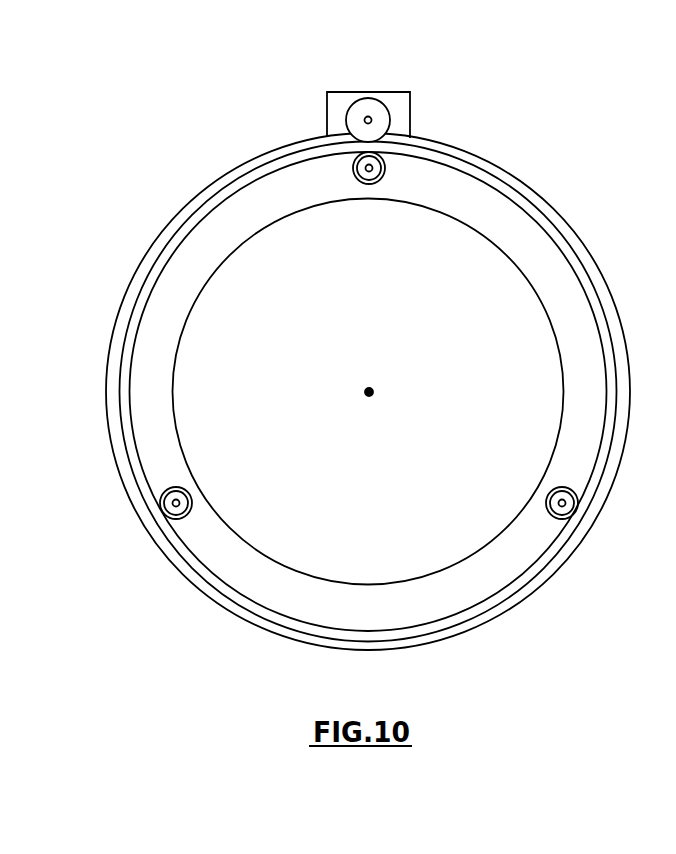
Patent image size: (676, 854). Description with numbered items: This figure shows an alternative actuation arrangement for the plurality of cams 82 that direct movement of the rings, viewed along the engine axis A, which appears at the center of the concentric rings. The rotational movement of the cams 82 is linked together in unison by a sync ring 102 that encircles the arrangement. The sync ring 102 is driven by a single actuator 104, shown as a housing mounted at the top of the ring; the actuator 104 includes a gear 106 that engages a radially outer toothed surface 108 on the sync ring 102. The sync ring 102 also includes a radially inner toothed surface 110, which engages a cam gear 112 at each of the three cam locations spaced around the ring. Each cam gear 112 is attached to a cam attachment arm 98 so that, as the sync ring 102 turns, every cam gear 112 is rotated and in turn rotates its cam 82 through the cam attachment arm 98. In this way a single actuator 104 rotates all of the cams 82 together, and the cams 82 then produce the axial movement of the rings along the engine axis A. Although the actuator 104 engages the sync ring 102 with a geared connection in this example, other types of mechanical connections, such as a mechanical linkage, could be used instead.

The sync ring 102 is at (518, 191).
The actuator 104 is at (397, 92).
The gear 106 is at (367, 103).
The radially outer toothed surface 108 is at (460, 163).
The radially inner toothed surface 110 is at (454, 166).
The cam gear 112 is at (385, 172).
The cam 82 is at (349, 183).
The cam attachment arm 98 is at (369, 171).
The engine axis A is at (371, 395).